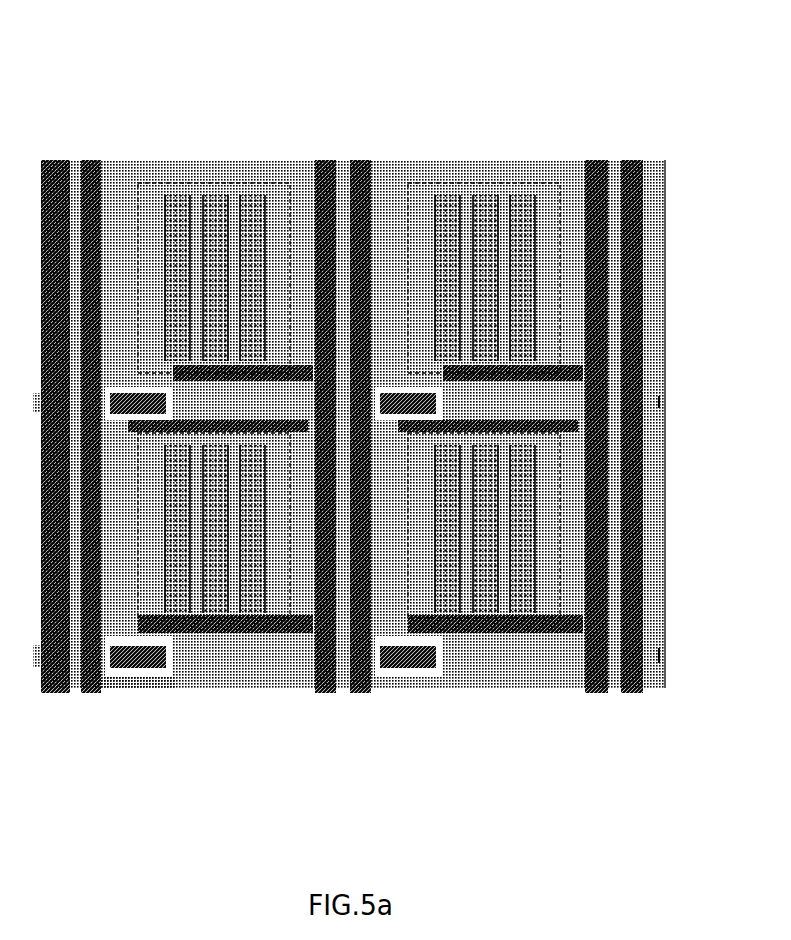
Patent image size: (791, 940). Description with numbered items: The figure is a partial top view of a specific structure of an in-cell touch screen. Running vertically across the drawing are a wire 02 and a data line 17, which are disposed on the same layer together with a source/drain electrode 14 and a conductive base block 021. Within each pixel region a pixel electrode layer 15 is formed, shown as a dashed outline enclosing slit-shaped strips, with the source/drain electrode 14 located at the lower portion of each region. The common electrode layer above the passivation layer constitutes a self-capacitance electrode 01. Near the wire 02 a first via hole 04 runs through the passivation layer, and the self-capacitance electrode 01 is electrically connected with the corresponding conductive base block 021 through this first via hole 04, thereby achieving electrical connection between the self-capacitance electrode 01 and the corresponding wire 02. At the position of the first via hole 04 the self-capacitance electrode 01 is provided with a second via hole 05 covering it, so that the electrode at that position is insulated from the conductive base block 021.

The self-capacitance electrode 01 is at (383, 178).
The wire 02 is at (82, 160).
The conductive base block 021 is at (100, 676).
The first via hole 04 is at (146, 664).
The second via hole 05 is at (130, 665).
The source/drain electrode 14 is at (302, 357).
The pixel electrode layer 15 is at (190, 185).
The data line 17 is at (318, 155).